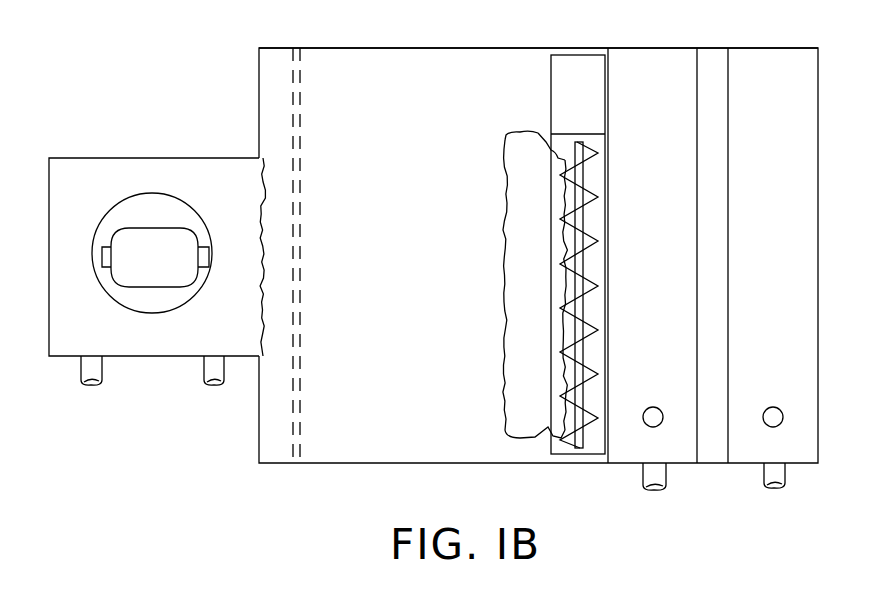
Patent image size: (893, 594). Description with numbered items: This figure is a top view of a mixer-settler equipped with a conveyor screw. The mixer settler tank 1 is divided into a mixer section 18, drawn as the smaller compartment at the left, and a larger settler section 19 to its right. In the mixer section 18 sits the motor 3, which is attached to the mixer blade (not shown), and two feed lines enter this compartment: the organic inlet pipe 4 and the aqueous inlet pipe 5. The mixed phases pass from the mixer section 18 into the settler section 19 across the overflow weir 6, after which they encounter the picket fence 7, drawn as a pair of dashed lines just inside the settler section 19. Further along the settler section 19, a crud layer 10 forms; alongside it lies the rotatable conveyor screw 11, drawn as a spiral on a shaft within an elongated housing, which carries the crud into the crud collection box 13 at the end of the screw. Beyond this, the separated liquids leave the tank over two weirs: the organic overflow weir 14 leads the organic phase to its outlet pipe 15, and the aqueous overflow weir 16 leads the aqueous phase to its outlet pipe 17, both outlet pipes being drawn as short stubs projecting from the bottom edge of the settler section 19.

The mixer settler tank 1 is at (330, 463).
The motor 3 is at (197, 208).
The organic inlet pipe 4 is at (102, 365).
The aqueous inlet pipe 5 is at (224, 365).
The overflow weir 6 is at (263, 222).
The picket fence 7 is at (300, 335).
The crud layer 10 is at (503, 243).
The rotatable conveyor screw 11 is at (573, 308).
The crud collection box 13 is at (562, 53).
The organic overflow weir 14 is at (608, 75).
The outlet pipe 15 is at (666, 475).
The aqueous overflow weir 16 is at (728, 68).
The outlet pipe 17 is at (785, 475).
The mixer section 18 is at (155, 156).
The settler section 19 is at (432, 48).